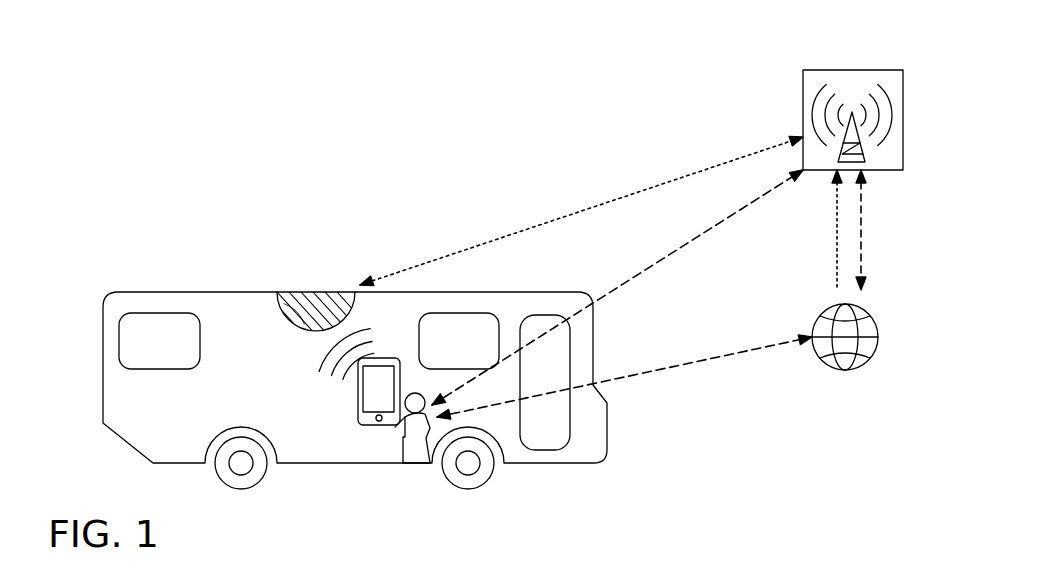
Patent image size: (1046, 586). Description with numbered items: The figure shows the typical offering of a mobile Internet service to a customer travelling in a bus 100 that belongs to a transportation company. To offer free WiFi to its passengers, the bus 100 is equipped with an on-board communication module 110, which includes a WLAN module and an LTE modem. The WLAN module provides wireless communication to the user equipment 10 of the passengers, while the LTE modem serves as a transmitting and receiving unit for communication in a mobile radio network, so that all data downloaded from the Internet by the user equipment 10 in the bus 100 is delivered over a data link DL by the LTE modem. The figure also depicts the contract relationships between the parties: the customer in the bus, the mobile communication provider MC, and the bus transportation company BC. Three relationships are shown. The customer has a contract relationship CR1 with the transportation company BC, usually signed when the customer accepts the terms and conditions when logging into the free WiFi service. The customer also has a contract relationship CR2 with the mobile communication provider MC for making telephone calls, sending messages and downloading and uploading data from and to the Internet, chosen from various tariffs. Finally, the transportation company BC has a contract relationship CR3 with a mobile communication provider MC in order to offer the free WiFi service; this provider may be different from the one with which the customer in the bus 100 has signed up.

The bus 100 is at (118, 302).
The on-board communication module 110 is at (290, 302).
The user equipment 10 is at (362, 393).
The mobile communication provider MC is at (892, 80).
The bus transportation company BC is at (857, 361).
The data link DL is at (534, 225).
The contract relationship to bus company CR1 is at (666, 367).
The contract relationship to mobile communication company CR2 is at (645, 271).
The contract relationship between bus company and mobile communication company CR3 is at (860, 227).